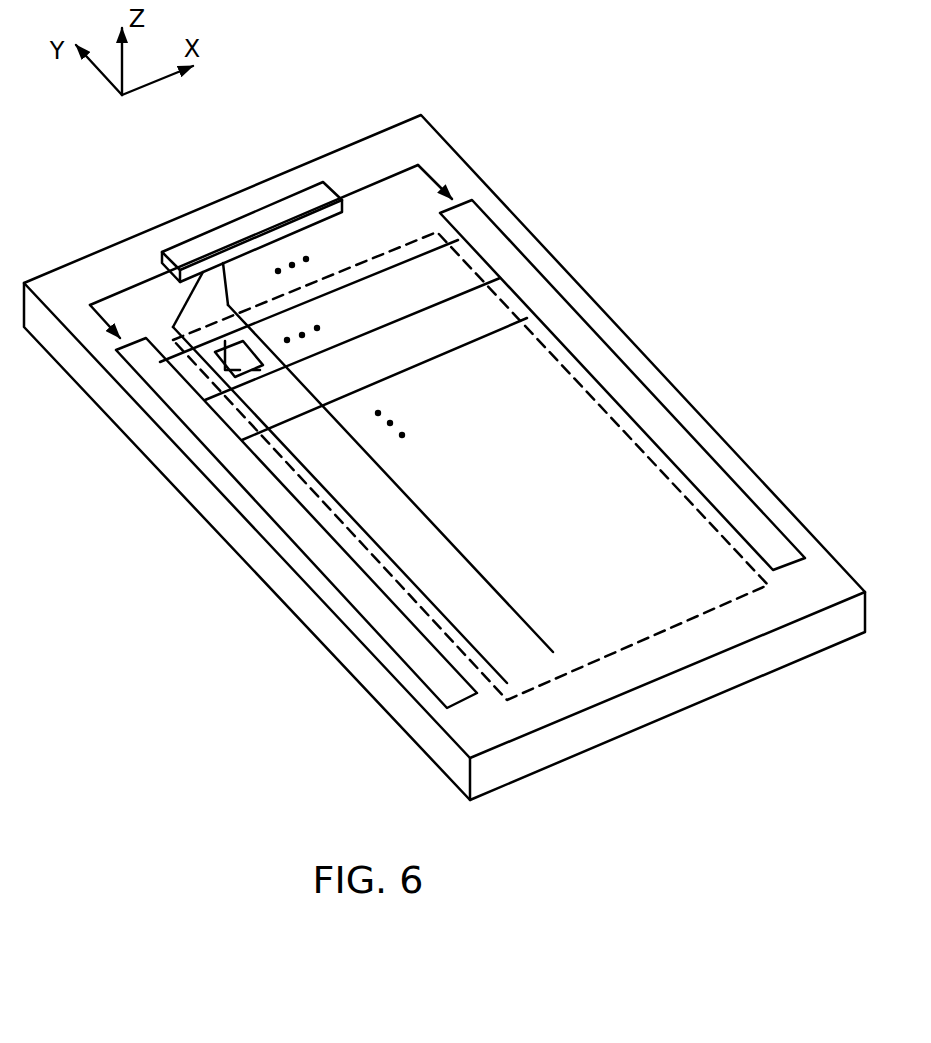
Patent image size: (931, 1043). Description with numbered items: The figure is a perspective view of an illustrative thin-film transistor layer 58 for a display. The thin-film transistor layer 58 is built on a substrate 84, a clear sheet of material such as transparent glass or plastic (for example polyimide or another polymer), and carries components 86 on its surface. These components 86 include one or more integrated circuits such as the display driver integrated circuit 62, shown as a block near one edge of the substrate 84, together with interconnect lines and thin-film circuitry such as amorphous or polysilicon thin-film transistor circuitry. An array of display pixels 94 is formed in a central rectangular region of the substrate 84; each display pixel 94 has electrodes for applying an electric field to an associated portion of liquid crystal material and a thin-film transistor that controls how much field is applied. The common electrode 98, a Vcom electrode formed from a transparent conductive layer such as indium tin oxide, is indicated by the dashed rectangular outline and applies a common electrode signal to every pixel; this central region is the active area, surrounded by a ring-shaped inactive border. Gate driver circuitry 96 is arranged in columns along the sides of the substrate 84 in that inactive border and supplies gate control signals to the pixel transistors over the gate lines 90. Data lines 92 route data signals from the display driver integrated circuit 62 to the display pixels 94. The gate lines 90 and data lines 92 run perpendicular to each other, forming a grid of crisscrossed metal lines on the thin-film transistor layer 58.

The thin-film transistor layer 58 is at (551, 126).
The display driver integrated circuit 62 is at (248, 228).
The substrate 84 is at (775, 652).
The components 86 is at (99, 278).
The gate lines 90 is at (360, 279).
The data lines 92 is at (415, 582).
The display pixels 94 is at (257, 372).
The gate driver circuitry 96 is at (632, 398).
The common electrode 98 is at (640, 645).